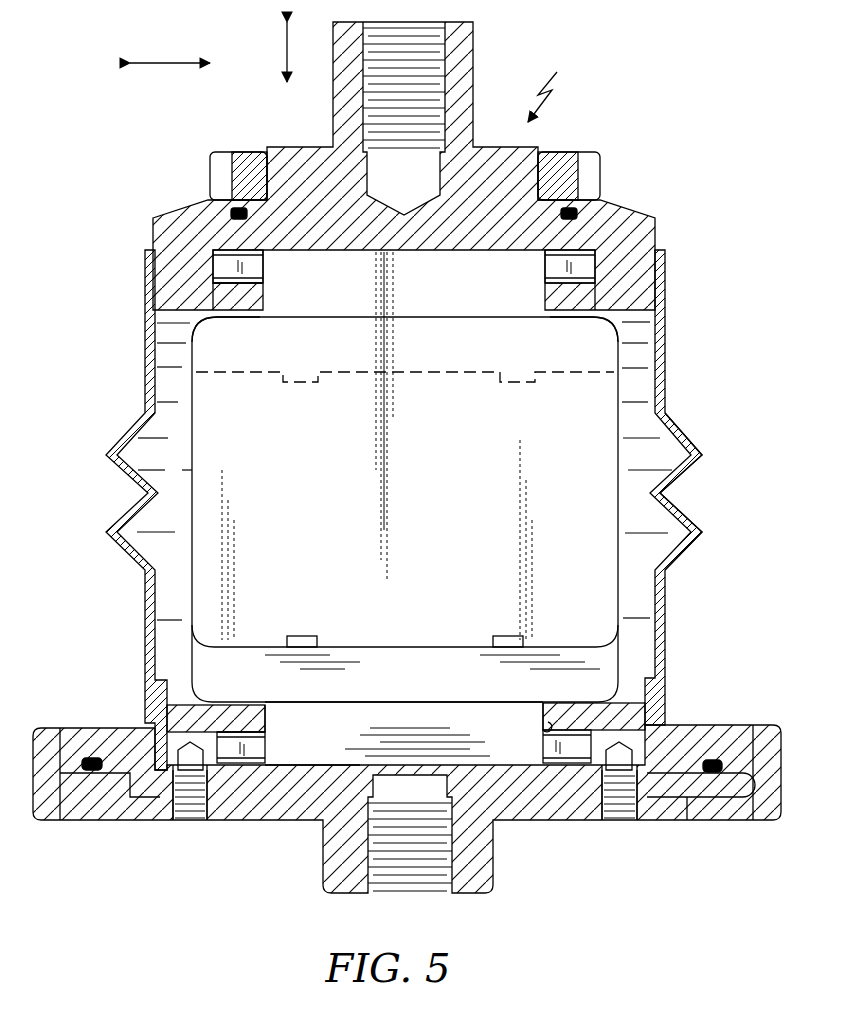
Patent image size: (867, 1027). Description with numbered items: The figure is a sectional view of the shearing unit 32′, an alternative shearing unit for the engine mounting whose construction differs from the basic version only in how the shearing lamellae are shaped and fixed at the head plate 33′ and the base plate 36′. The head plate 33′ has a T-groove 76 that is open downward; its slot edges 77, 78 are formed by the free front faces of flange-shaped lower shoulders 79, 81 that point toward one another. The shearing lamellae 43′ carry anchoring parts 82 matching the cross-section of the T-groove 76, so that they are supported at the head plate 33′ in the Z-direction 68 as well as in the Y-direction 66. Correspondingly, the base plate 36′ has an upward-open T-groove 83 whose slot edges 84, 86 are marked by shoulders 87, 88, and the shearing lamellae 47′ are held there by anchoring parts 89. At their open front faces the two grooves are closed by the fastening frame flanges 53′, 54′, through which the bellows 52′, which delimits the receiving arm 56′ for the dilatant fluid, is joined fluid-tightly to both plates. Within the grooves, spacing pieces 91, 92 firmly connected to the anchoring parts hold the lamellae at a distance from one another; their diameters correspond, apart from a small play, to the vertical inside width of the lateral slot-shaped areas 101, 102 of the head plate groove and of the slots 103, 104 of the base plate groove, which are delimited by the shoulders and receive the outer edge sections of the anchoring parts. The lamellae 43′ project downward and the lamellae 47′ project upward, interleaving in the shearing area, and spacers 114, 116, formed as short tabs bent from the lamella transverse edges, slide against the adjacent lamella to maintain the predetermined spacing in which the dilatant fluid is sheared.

The Y-direction 66 is at (180, 62).
The Z-direction 68 is at (286, 60).
The head plate 33′ is at (303, 150).
The shearing unit 32′ is at (556, 85).
The fastening frame flange 53′ is at (207, 210).
The anchoring part 82 is at (503, 262).
The T-groove 76 is at (482, 265).
The lateral slot-shaped area 101 is at (257, 269).
The spacing piece 91 is at (262, 281).
The lateral slot-shaped area 102 is at (552, 268).
The lower shoulder 79 is at (245, 297).
The lower shoulder 81 is at (568, 300).
The slot edge 77 is at (254, 302).
The slot edge 78 is at (556, 302).
The shearing lamella 47′ is at (619, 660).
The spacer 116 is at (305, 384).
The spacer 114 is at (303, 633).
The shearing lamella 43′ is at (610, 357).
The bellows 52′ is at (678, 476).
The receiving arm 56′ is at (160, 602).
The shoulder 87 is at (225, 714).
The slot edge 84 is at (258, 712).
The shoulder 88 is at (582, 716).
The slot edge 86 is at (562, 713).
The slot 103 is at (255, 748).
The spacing piece 92 is at (267, 735).
The slot 104 is at (543, 747).
The base plate 36′ is at (247, 812).
The fastening frame flange 54′ is at (108, 730).
The T-groove 83 is at (318, 770).
The anchoring part 89 is at (494, 744).